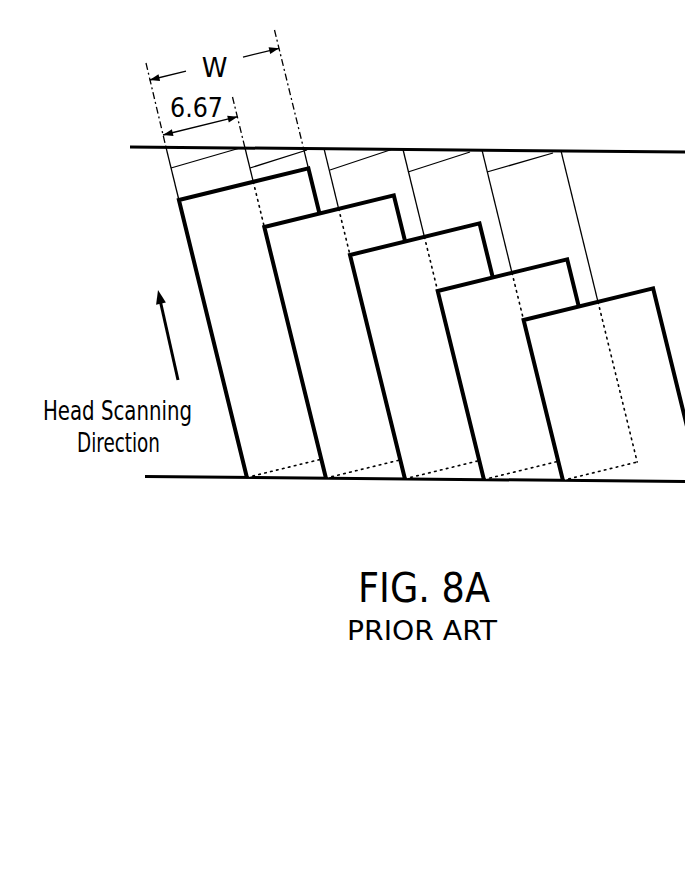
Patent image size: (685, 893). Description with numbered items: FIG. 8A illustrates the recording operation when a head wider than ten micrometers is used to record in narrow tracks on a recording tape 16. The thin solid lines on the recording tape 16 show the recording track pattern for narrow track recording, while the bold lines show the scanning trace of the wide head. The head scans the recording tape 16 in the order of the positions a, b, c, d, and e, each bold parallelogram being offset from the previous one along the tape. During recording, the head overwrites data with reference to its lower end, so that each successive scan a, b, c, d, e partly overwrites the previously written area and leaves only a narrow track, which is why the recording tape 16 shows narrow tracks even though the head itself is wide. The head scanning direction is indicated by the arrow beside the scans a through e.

The recording tape 16 is at (597, 149).
The head scan a is at (278, 352).
The head scan b is at (359, 366).
The head scan c is at (442, 380).
The head scan d is at (526, 398).
The head scan e is at (604, 412).